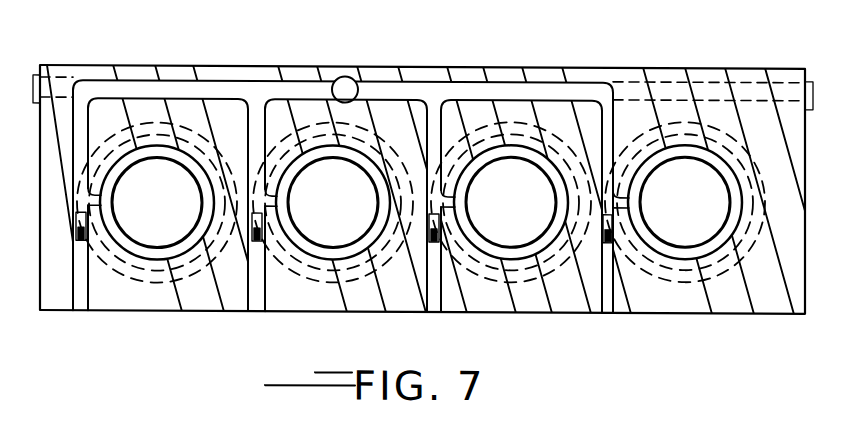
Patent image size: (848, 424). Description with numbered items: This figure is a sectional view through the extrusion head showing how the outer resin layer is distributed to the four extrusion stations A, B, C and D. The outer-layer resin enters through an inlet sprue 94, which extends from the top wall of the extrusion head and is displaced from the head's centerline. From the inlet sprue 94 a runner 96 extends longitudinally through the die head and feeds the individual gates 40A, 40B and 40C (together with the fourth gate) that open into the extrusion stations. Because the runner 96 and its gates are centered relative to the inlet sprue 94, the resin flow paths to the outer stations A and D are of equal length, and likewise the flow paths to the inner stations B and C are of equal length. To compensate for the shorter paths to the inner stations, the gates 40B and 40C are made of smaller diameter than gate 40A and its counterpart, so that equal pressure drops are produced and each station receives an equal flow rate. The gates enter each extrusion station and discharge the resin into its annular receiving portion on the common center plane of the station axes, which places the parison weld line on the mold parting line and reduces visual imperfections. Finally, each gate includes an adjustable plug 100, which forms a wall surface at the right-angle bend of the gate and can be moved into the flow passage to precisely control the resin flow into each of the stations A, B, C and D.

The gate 40A is at (68, 118).
The gate 40B is at (455, 116).
The gate 40C is at (272, 117).
The runner 96 is at (181, 82).
The inlet sprue 94 is at (358, 83).
The adjustable plug 100 is at (76, 205).
The extrusion station A is at (685, 256).
The extrusion station B is at (492, 257).
The extrusion station C is at (322, 258).
The extrusion station D is at (155, 259).